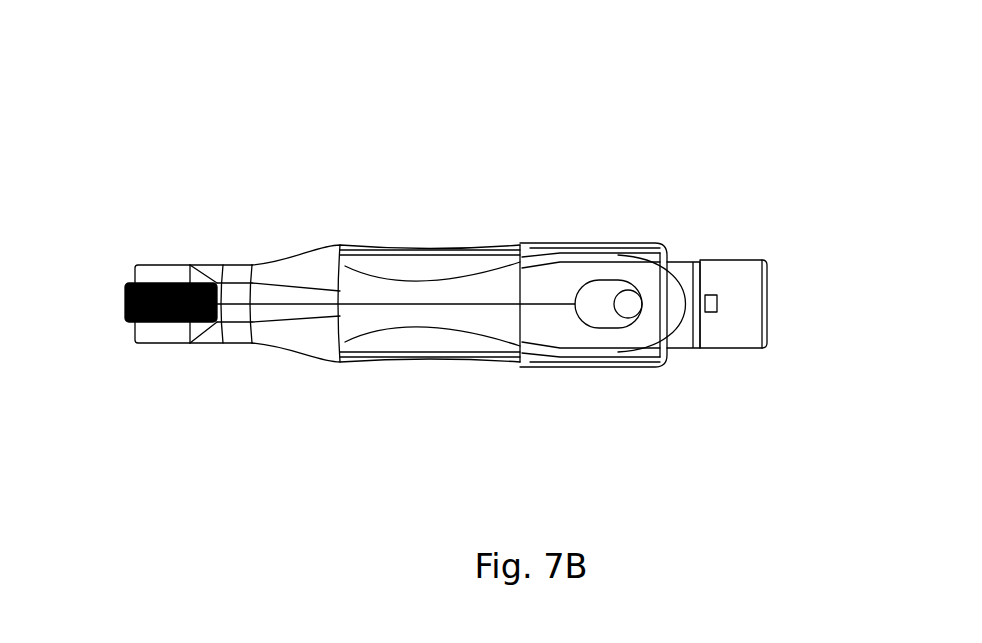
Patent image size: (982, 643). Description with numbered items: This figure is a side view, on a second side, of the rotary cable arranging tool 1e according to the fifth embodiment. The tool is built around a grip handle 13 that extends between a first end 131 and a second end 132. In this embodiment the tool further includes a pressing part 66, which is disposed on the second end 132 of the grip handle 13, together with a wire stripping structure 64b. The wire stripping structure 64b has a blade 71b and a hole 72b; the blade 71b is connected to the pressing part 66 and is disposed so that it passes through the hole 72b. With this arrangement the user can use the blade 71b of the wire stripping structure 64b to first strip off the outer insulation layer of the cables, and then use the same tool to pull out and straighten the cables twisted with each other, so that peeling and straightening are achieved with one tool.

The rotary cable arranging tool 1e is at (816, 99).
The first end 131 is at (151, 195).
The second end 132 is at (726, 200).
The grip handle 13 is at (418, 352).
The wire stripping structure 64b is at (670, 188).
The hole 72b is at (603, 283).
The blade 71b is at (628, 290).
The pressing part 66 is at (738, 341).